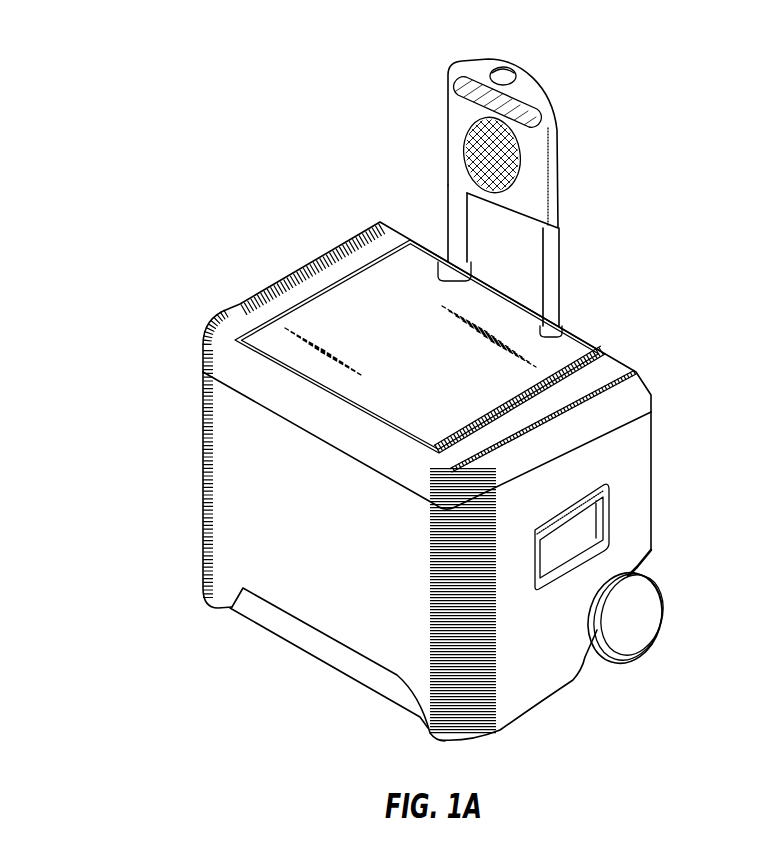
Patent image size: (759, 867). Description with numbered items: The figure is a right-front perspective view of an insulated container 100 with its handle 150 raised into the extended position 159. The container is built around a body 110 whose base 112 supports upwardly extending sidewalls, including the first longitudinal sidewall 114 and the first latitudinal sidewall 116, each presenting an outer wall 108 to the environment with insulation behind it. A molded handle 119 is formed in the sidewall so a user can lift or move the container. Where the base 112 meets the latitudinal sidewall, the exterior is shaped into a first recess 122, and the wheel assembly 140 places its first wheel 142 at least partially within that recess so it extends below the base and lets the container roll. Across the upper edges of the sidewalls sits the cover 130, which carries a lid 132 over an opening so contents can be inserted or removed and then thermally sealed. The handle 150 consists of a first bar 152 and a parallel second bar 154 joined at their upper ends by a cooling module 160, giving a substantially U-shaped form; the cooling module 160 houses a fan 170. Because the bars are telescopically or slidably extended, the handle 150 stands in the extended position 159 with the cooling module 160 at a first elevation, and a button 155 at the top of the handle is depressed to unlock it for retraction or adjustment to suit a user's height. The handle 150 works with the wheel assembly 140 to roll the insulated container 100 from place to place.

The insulated container 100 is at (227, 100).
The outer wall 108 is at (538, 683).
The body 110 is at (668, 430).
The base 112 is at (328, 663).
The first longitudinal sidewall 114 is at (227, 507).
The first latitudinal sidewall 116 is at (630, 530).
The molded handle 119 is at (613, 492).
The first recess 122 is at (640, 567).
The cover 130 is at (650, 388).
The lid 132 is at (572, 347).
The wheel assembly 140 is at (663, 603).
The first wheel 142 is at (635, 638).
The handle 150 is at (583, 178).
The first bar 152 is at (563, 270).
The second bar 154 is at (450, 217).
The button 155 is at (503, 70).
The extended position 159 is at (580, 95).
The cooling module 160 is at (458, 120).
The fan 170 is at (463, 128).